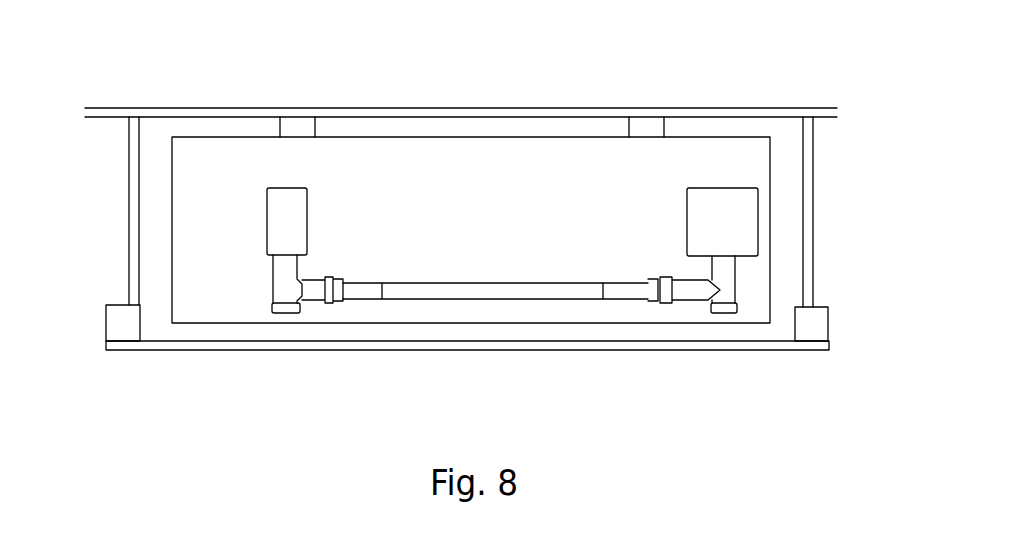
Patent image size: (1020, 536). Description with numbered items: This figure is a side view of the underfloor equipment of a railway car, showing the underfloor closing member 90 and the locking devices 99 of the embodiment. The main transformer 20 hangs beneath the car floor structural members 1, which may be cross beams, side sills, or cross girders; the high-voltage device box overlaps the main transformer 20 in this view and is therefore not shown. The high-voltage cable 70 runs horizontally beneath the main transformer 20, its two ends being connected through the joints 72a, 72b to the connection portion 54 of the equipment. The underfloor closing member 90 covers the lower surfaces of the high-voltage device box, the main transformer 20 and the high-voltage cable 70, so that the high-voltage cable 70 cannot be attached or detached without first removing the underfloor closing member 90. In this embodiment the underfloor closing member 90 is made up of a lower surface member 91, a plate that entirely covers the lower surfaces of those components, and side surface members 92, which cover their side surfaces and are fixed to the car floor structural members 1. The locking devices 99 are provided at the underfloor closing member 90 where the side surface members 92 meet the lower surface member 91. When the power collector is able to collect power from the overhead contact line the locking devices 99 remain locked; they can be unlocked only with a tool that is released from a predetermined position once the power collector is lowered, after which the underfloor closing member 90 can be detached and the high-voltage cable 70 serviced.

The car floor structural member 1 is at (413, 107).
The main transformer 20 is at (225, 137).
The valve unit 54 is at (267, 227).
The high-voltage cable 70 is at (463, 292).
The pipe joint 72a is at (317, 289).
The pipe joint 72b is at (693, 292).
The underfloor closing member 90 is at (128, 361).
The lower surface member 91 is at (595, 352).
The side surface member 92 is at (129, 213).
The locking device 99 is at (106, 321).